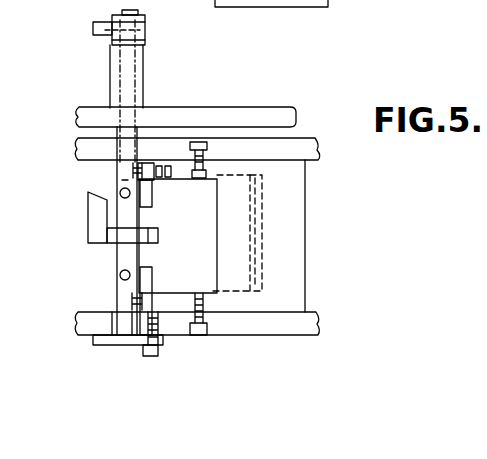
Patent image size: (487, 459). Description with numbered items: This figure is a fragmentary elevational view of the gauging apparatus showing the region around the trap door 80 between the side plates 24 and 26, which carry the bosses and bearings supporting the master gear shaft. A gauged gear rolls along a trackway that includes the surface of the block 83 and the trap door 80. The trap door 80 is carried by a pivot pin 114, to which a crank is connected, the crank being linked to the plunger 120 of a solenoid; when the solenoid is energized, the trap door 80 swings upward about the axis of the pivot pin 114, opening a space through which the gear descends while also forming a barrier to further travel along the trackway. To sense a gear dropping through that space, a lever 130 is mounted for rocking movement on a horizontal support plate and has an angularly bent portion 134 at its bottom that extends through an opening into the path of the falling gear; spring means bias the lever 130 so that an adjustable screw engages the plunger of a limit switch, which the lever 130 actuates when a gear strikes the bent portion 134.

The side plate 24 is at (304, 150).
The side plate 26 is at (314, 323).
The trap door 80 is at (191, 230).
The block 83 is at (308, 233).
The pivot pin 114 is at (133, 79).
The plunger 120 is at (249, 4).
The lever 130 is at (93, 218).
The angularly bent portion 134 is at (156, 245).